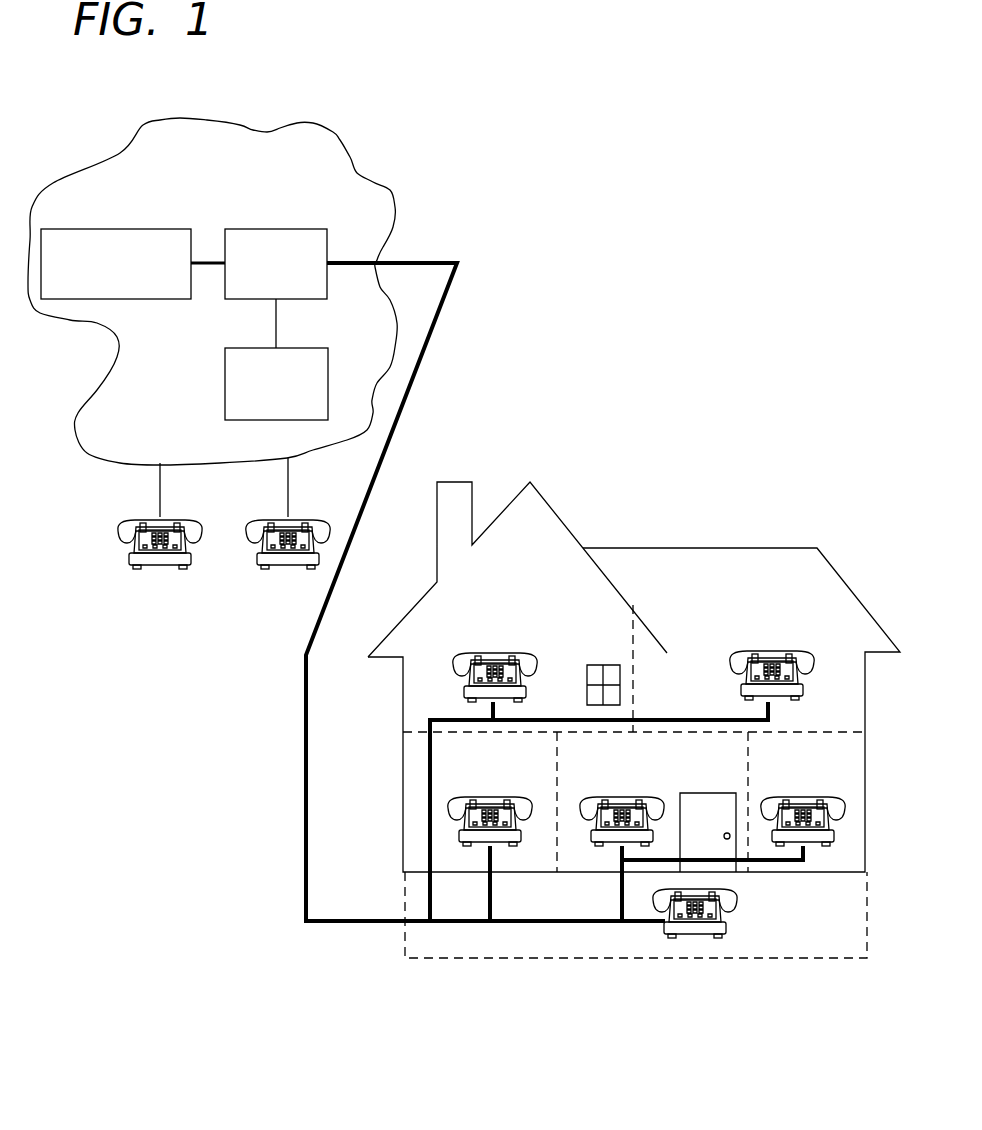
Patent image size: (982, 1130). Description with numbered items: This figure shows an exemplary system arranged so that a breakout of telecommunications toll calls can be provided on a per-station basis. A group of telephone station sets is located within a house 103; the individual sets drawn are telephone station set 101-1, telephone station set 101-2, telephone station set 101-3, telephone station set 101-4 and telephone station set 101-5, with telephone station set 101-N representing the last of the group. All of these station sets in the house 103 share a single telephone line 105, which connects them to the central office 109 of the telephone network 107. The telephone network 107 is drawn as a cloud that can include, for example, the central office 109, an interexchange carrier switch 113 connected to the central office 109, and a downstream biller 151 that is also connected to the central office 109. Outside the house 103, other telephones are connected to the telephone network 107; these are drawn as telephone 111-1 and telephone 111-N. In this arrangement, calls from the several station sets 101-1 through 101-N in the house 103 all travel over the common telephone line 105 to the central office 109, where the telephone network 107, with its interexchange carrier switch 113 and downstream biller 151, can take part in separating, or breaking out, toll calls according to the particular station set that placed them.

The telephone network 107 is at (343, 141).
The downstream biller 151 is at (138, 229).
The central office 109 is at (289, 229).
The interexchange carrier switch 113 is at (322, 334).
The telephone line 105 is at (458, 263).
The house 103 is at (555, 508).
The telephone station set 101-1 is at (722, 933).
The telephone station set 101-2 is at (493, 797).
The telephone station set 101-3 is at (623, 797).
The telephone station set 101-4 is at (803, 797).
The telephone station set 101-5 is at (773, 651).
The telephone station set 101-N is at (495, 653).
The telephone 111-1 is at (287, 572).
The telephone 111-N is at (160, 572).